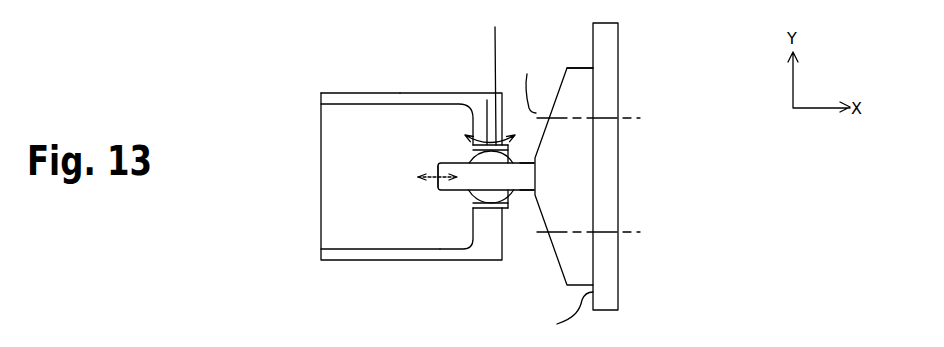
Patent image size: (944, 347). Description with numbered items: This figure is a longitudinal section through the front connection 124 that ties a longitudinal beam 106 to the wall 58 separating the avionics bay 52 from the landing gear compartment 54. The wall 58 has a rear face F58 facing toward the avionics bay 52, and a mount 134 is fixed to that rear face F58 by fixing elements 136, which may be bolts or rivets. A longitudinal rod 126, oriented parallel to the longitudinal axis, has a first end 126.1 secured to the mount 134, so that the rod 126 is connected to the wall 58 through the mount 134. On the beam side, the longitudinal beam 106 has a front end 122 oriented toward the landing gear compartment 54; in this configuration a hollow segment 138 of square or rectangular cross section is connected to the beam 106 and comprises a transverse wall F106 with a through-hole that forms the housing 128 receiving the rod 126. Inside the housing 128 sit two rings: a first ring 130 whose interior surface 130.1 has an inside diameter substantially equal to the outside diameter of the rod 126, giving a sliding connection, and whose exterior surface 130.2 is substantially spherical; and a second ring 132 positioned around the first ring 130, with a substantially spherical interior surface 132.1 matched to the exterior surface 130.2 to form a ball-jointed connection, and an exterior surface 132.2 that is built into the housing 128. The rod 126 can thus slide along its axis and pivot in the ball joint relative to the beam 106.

The avionics bay 52 is at (383, 71).
The landing gear compartment 54 is at (633, 75).
The wall 58 is at (618, 54).
The longitudinal beam 106 is at (335, 259).
The front end 122 is at (452, 252).
The front connection 124 is at (517, 222).
The longitudinal rod 126 is at (450, 161).
The first end 126.1 is at (527, 177).
The housing 128 is at (486, 220).
The first ring 130 is at (455, 197).
The interior surface 130.1 is at (437, 188).
The exterior surface 130.2 is at (470, 207).
The second ring 132 is at (482, 112).
The interior surface 132.1 is at (537, 157).
The exterior surface 132.2 is at (493, 74).
The mount 134 is at (572, 220).
The fixing elements 136 is at (627, 118).
The hollow segment 138 is at (340, 92).
The transverse wall F106 is at (530, 82).
The rear face F58 is at (554, 315).